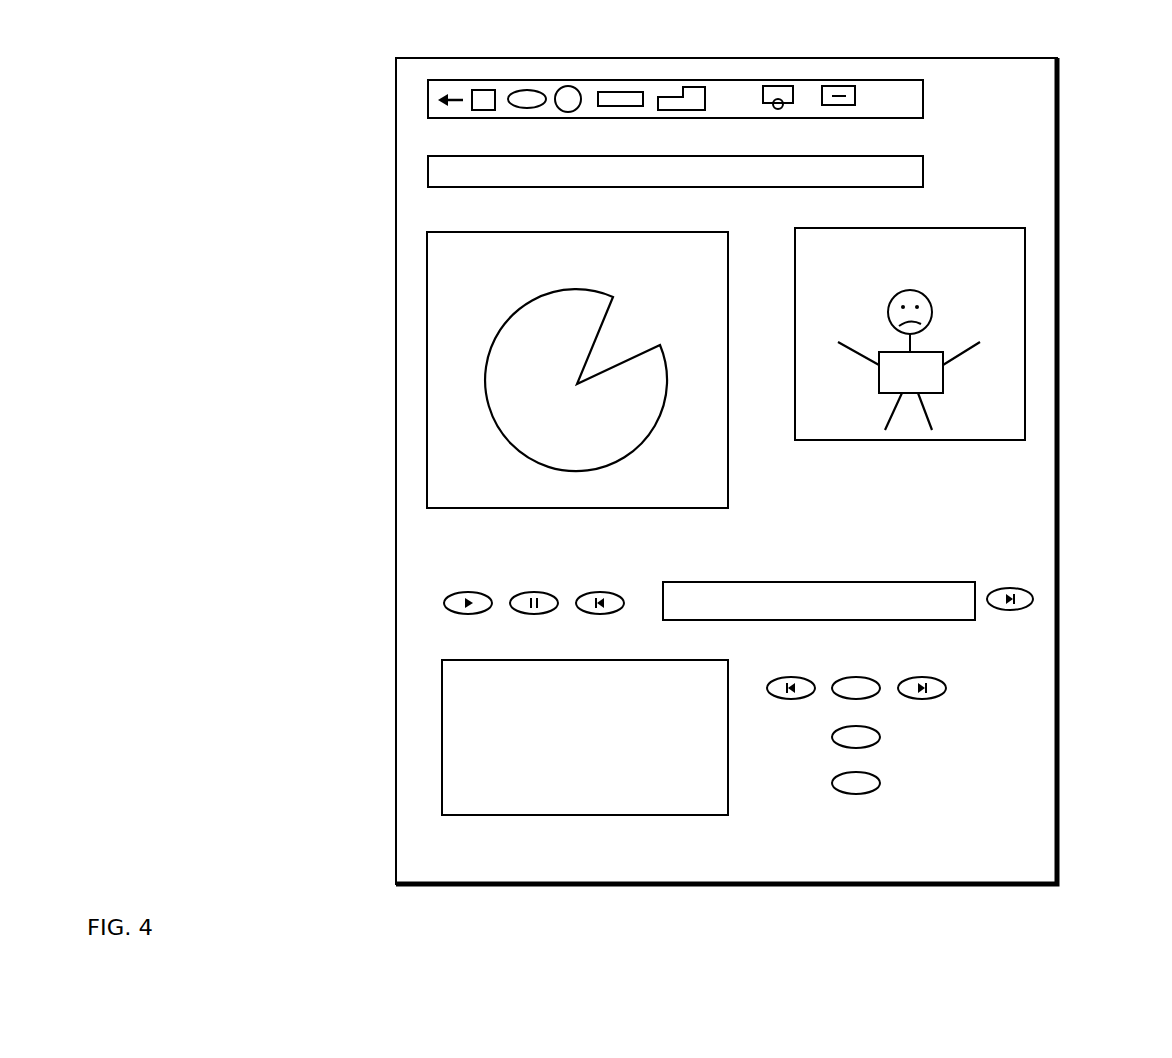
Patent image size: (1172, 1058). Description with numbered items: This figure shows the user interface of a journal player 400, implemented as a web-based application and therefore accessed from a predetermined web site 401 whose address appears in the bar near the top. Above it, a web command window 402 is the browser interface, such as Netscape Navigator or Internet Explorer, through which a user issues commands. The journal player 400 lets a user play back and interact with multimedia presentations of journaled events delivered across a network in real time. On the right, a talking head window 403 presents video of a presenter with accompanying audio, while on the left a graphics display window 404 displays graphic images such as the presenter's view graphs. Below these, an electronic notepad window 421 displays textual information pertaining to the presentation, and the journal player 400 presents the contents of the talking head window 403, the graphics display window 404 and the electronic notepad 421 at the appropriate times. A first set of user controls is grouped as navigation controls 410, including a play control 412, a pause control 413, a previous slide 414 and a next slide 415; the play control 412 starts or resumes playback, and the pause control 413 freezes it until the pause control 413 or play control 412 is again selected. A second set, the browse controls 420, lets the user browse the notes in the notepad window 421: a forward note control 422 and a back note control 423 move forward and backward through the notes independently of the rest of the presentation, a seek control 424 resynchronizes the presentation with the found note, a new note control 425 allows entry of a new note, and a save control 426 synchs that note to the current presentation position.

The journal player 400 is at (1060, 448).
The predetermined web site 401 is at (924, 164).
The web command window 402 is at (924, 91).
The talking head window 403 is at (973, 441).
The graphics display window 404 is at (729, 467).
The navigation controls 410 is at (727, 583).
The play control 412 is at (464, 592).
The pause control 413 is at (528, 593).
The previous slide 414 is at (593, 592).
The next slide 415 is at (1016, 588).
The browse controls 420 is at (791, 781).
The electronic notepad window 421 is at (602, 816).
The forward note control 422 is at (793, 677).
The back note control 423 is at (938, 678).
The seek control 424 is at (864, 677).
The new note control 425 is at (880, 736).
The save control 426 is at (880, 782).